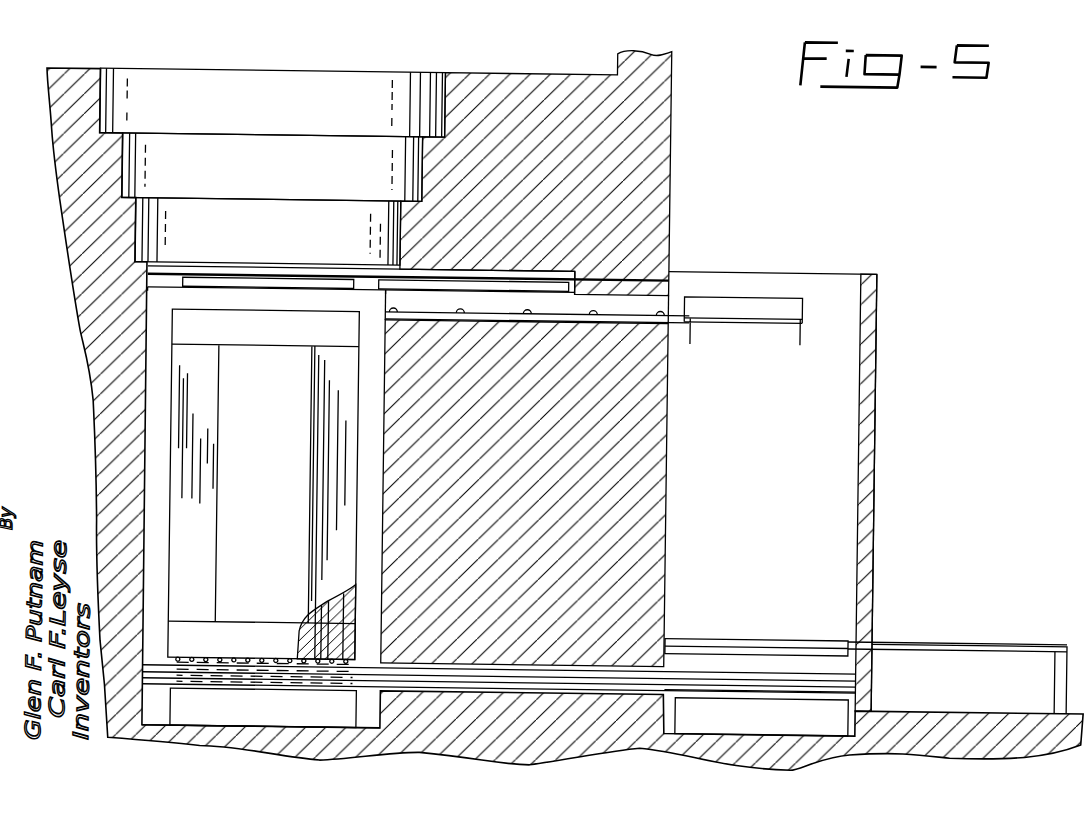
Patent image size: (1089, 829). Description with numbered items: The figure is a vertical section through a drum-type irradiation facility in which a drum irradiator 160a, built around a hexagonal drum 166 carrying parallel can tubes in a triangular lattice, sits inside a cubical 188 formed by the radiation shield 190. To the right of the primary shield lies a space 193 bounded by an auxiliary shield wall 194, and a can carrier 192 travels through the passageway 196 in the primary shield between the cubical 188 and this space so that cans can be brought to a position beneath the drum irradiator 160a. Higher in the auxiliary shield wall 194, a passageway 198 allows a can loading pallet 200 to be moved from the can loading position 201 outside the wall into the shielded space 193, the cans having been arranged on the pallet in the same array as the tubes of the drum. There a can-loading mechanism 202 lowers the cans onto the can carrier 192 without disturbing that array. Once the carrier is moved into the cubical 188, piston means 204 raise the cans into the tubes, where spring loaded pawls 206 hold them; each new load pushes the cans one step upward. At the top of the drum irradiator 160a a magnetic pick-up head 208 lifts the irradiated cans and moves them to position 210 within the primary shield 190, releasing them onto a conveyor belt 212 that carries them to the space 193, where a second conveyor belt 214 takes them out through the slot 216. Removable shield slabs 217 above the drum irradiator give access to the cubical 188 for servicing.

The drum irradiator 160a is at (168, 433).
The hexagonal drum 166 is at (327, 431).
The cubical 188 is at (150, 403).
The radiation shield 190 is at (86, 309).
The can carrier 192 is at (240, 693).
The space 193 is at (838, 448).
The auxiliary shield wall 194 is at (869, 475).
The passageway 196 is at (574, 690).
The passageway 198 is at (877, 638).
The can loading pallet 200 is at (773, 637).
The can loading position 201 is at (1027, 625).
The can-loading mechanism 202 is at (794, 725).
The piston means 204 is at (224, 730).
The spring loaded pawls 206 is at (206, 661).
The magnetic pick-up head 208 is at (208, 276).
The position 210 is at (528, 250).
The conveyor belt 212 is at (510, 300).
The second conveyor belt 214 is at (759, 319).
The slot 216 is at (772, 299).
The shield slabs 217 is at (320, 64).